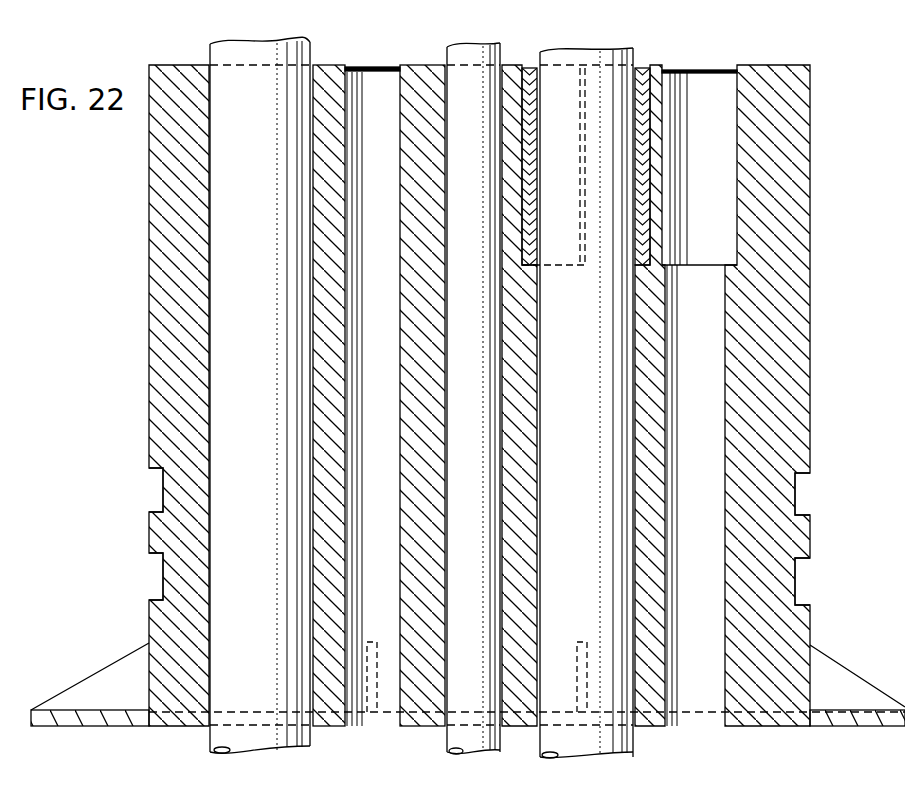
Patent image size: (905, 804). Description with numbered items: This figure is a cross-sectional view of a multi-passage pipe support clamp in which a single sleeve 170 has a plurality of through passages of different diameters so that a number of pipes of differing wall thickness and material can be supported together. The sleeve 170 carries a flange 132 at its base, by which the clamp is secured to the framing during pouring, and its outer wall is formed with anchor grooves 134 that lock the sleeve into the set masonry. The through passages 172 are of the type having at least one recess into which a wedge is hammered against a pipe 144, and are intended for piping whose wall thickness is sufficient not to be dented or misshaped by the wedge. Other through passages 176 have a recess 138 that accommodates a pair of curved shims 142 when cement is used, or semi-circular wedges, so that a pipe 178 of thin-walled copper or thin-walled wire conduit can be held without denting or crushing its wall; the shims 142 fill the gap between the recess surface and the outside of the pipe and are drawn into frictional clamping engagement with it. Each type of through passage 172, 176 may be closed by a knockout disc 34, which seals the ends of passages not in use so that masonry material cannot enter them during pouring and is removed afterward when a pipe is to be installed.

The sleeve 170 is at (161, 270).
The pipe 178 is at (537, 348).
The curved shims 142 is at (531, 67).
The recess 138 is at (524, 165).
The knockout disc 34 is at (379, 73).
The through passage 172 is at (395, 427).
The through passage 176 is at (719, 397).
The pipe 144 is at (255, 314).
The flange 132 is at (850, 716).
The anchor grooves 134 is at (163, 585).